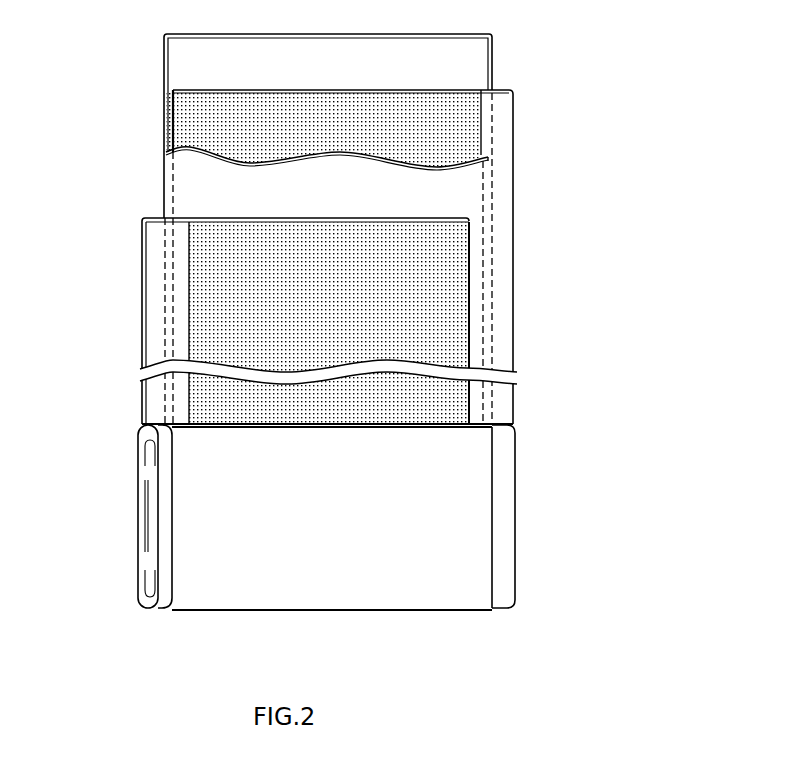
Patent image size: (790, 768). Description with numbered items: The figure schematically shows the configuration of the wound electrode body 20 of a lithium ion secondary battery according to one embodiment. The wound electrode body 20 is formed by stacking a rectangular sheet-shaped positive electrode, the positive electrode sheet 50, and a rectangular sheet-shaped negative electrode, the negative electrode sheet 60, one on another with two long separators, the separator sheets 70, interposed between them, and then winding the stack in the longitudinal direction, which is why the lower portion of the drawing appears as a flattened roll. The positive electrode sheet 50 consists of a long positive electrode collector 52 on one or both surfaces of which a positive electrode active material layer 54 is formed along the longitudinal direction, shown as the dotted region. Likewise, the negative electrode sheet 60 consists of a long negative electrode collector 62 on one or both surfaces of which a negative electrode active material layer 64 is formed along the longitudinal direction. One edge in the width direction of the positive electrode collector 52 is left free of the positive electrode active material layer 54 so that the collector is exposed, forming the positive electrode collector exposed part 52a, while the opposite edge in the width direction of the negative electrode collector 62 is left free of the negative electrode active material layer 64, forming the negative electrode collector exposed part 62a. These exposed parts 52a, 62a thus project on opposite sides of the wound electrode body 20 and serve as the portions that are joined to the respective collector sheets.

The wound electrode body 20 is at (412, 590).
The positive electrode sheet 50 is at (267, 413).
The positive electrode collector 52 is at (142, 352).
The positive electrode collector exposed part 52a is at (160, 524).
The positive electrode active material layer 54 is at (200, 237).
The negative electrode sheet 60 is at (394, 349).
The negative electrode collector 62 is at (513, 263).
The negative electrode collector exposed part 62a is at (500, 213).
The negative electrode active material layer 64 is at (481, 112).
The separator sheet 70 is at (182, 63).